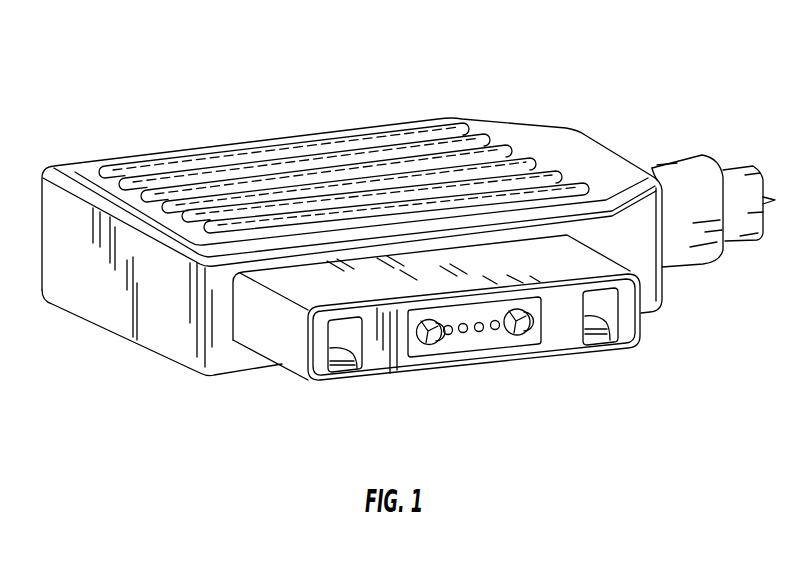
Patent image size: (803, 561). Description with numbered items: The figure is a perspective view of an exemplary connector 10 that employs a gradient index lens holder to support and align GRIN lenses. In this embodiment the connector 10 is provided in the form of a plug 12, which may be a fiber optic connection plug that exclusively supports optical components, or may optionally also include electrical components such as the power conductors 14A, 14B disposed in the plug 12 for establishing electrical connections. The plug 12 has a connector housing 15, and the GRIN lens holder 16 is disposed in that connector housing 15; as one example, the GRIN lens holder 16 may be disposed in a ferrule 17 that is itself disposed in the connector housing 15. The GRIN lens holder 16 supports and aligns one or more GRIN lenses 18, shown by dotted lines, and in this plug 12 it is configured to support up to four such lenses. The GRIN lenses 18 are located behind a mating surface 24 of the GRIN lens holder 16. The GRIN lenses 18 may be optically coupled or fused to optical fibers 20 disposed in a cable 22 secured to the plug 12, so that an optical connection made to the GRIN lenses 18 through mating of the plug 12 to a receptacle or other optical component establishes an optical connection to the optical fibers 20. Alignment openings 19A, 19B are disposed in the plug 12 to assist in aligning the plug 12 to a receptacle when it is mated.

The connector 10 is at (241, 86).
The plug 12 is at (377, 122).
The power conductor 14A is at (342, 370).
The power conductor 14B is at (611, 348).
The connector housing 15 is at (290, 350).
The GRIN lens holder 16 is at (479, 356).
The ferrule 17 is at (421, 308).
The GRIN lenses 18 is at (460, 345).
The alignment opening 19A is at (428, 345).
The alignment opening 19B is at (520, 337).
The optical fibers 20 is at (744, 256).
The cable 22 is at (746, 165).
The mating surface 24 is at (496, 331).